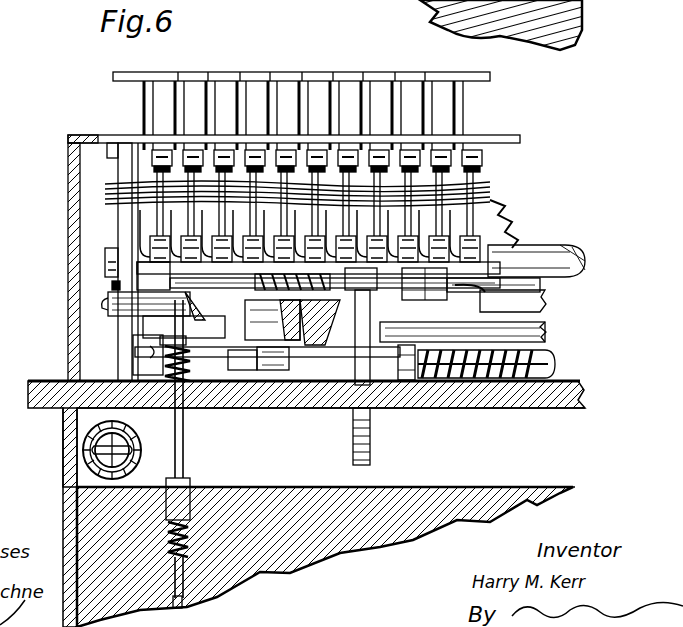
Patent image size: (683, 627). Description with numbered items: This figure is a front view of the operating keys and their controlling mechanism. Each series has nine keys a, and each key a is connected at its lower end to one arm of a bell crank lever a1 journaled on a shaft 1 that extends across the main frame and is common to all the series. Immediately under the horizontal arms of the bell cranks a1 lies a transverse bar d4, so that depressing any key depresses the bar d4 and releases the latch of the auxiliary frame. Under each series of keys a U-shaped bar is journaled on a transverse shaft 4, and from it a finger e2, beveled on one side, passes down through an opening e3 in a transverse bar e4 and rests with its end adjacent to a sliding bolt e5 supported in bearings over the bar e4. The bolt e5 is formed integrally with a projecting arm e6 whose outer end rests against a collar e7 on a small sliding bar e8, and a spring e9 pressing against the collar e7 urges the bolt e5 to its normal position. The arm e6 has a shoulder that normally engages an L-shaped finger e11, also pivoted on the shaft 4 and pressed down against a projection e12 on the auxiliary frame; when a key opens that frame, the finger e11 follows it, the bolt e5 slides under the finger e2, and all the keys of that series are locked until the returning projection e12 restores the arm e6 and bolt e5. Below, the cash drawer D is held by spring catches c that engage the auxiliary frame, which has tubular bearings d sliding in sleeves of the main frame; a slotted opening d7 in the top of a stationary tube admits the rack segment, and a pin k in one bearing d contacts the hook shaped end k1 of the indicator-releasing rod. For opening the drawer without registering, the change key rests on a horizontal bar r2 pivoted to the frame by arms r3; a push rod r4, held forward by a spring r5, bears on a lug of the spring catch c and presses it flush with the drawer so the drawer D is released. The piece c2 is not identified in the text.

The key a is at (137, 76).
The bell crank lever a1 is at (296, 188).
The shaft 1 is at (110, 250).
The transverse shaft 4 is at (112, 287).
The horizontal bar r2 is at (146, 304).
The arm r3 is at (110, 318).
The push rod r4 is at (184, 455).
The spring r5 is at (197, 356).
The finger e2 is at (292, 305).
The opening e3 is at (290, 372).
The transverse bar e4 is at (463, 328).
The sliding bolt e5 is at (315, 346).
The projecting arm e6 is at (397, 385).
The collar e7 is at (423, 380).
The sliding bar e8 is at (240, 372).
The spring e9 is at (537, 350).
The L-shaped finger e11 is at (375, 326).
The projection e12 is at (357, 432).
The transverse bar d4 is at (522, 278).
The piece c2 is at (503, 292).
The spring catch c is at (185, 488).
The tubular bearing d is at (125, 453).
The slotted opening d7 is at (113, 430).
The pin k is at (78, 465).
The hook shaped end k1 is at (82, 448).
The drawer D is at (325, 557).